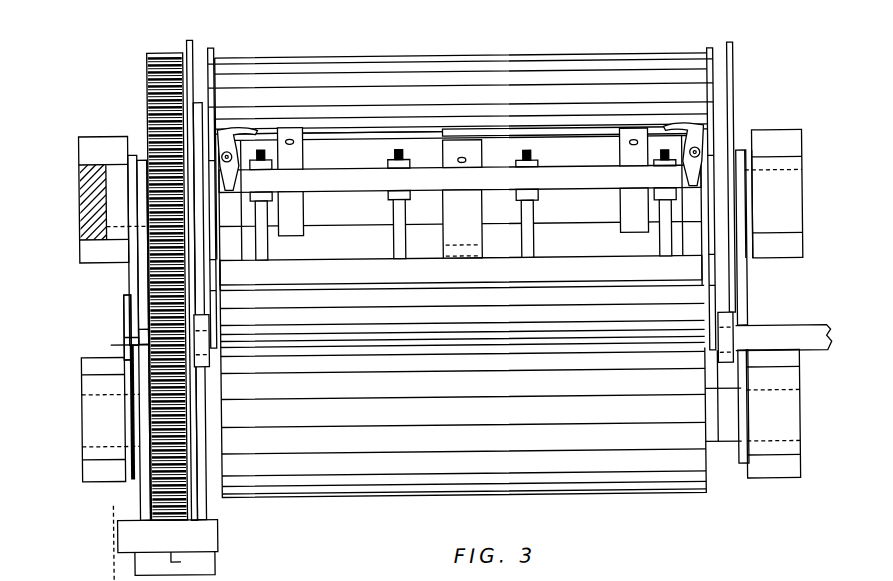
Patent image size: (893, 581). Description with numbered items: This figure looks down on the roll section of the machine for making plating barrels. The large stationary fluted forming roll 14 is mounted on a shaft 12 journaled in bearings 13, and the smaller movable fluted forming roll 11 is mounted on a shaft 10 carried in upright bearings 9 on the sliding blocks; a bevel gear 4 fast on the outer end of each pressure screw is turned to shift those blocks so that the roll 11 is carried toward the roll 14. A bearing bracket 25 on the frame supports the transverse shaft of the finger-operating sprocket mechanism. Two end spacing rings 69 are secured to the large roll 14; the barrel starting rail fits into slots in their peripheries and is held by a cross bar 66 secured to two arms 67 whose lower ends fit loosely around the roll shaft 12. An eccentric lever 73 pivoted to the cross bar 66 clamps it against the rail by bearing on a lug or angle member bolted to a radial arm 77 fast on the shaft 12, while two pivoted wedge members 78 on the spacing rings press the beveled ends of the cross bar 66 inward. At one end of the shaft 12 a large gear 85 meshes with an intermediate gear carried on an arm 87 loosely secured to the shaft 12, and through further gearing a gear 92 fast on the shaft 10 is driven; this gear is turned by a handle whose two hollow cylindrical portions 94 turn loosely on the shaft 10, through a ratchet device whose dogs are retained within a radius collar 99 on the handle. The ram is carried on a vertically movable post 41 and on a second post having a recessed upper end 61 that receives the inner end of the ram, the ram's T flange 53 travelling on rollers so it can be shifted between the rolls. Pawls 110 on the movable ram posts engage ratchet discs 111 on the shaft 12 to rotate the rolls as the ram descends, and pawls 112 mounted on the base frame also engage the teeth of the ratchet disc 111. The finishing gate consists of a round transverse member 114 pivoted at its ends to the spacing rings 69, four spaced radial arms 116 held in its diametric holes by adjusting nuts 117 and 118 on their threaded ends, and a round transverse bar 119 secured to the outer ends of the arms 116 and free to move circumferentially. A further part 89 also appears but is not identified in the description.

The bevel gear 4 is at (136, 336).
The upright bearing 9 is at (92, 368).
The shaft 10 is at (216, 435).
The fluted forming roll 11 is at (360, 482).
The shaft 12 is at (143, 155).
The bearing 13 is at (101, 141).
The stationary fluted forming roll 14 is at (335, 64).
The bearing bracket 25 is at (87, 196).
The vertically movable post 41 is at (720, 365).
The T flange 53 is at (803, 337).
The recessed upper end 61 is at (206, 357).
The cross bar 66 is at (355, 126).
The arm 67 is at (297, 162).
The end spacing ring 69 is at (216, 45).
The eccentric lever 73 is at (448, 138).
The radial arm 77 is at (476, 212).
The wedge member 78 is at (236, 126).
The large gear 85 is at (162, 49).
The arm 87 is at (134, 152).
The bearing bracket 89 is at (125, 348).
The gear 92 is at (162, 474).
The hollow cylindrical portion 94 is at (146, 474).
The radius collar 99 is at (211, 537).
The pawl 110 is at (146, 309).
The ratchet disc 111 is at (194, 282).
The pawl 112 is at (193, 47).
The round transverse member 114 is at (352, 176).
The radial arm 116 is at (266, 247).
The adjusting nut 117 is at (541, 161).
The adjusting nut 118 is at (540, 195).
The round transverse bar 119 is at (577, 270).